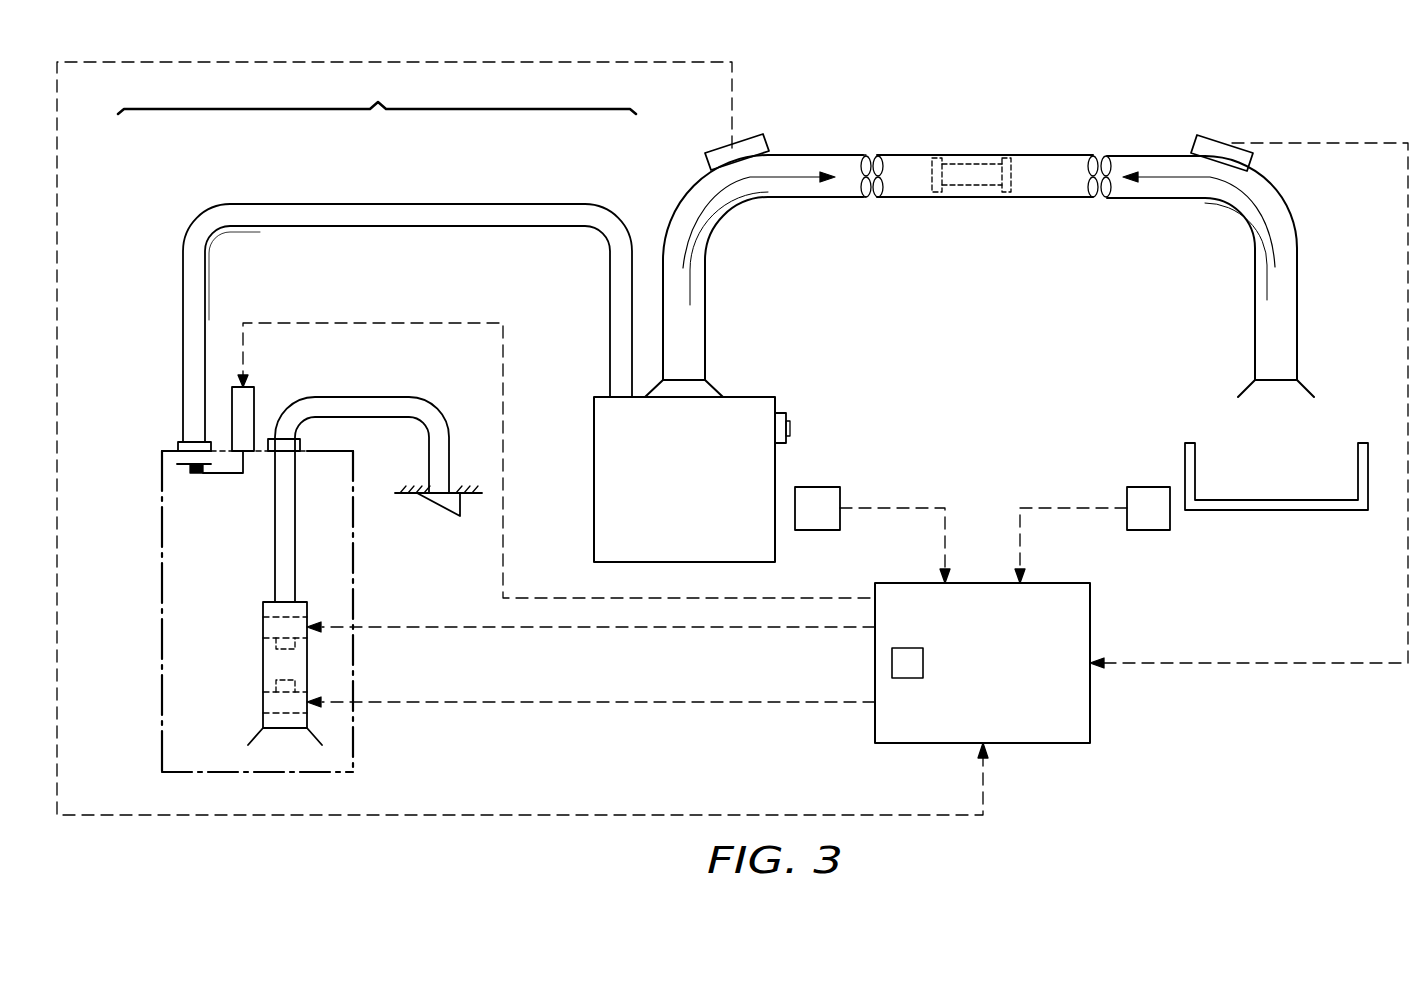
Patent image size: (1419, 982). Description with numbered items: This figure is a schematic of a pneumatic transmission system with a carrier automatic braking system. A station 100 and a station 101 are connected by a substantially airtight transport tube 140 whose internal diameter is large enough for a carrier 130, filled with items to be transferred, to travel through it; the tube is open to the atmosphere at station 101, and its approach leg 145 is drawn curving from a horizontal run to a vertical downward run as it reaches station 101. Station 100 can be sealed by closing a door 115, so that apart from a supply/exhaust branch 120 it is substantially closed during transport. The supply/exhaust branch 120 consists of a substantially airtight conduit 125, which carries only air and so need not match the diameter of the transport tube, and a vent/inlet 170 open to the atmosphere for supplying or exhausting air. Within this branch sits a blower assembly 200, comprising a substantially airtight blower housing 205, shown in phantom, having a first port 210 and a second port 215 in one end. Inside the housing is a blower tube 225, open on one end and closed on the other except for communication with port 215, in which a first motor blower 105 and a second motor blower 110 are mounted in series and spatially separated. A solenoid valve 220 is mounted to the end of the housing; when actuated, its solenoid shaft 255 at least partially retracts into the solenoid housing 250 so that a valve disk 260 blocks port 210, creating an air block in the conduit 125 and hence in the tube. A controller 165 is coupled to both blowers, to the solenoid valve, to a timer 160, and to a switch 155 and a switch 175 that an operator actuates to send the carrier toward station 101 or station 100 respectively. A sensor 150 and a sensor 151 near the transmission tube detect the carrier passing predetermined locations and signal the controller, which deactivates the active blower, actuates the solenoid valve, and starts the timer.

The station 100 is at (594, 487).
The station 101 is at (1318, 510).
The first motor blower 105 is at (263, 630).
The second motor blower 110 is at (263, 700).
The door 115 is at (790, 421).
The supply/exhaust branch 120 is at (377, 94).
The conduit 125 is at (385, 204).
The carrier 130 is at (970, 158).
The transport tube 140 is at (1052, 155).
The approach leg 145 is at (1297, 300).
The sensor 150 is at (1215, 135).
The sensor 151 is at (763, 143).
The switch 155 is at (822, 487).
The timer 160 is at (923, 664).
The controller 165 is at (1057, 583).
The vent/inlet 170 is at (386, 397).
The switch 175 is at (1143, 487).
The blower assembly 200 is at (146, 620).
The blower housing 205 is at (162, 718).
The first port 210 is at (178, 445).
The second port 215 is at (300, 445).
The solenoid valve 220 is at (276, 360).
The blower tube 225 is at (263, 612).
The solenoid housing 250 is at (254, 406).
The solenoid shaft 255 is at (243, 478).
The valve disk 260 is at (184, 478).